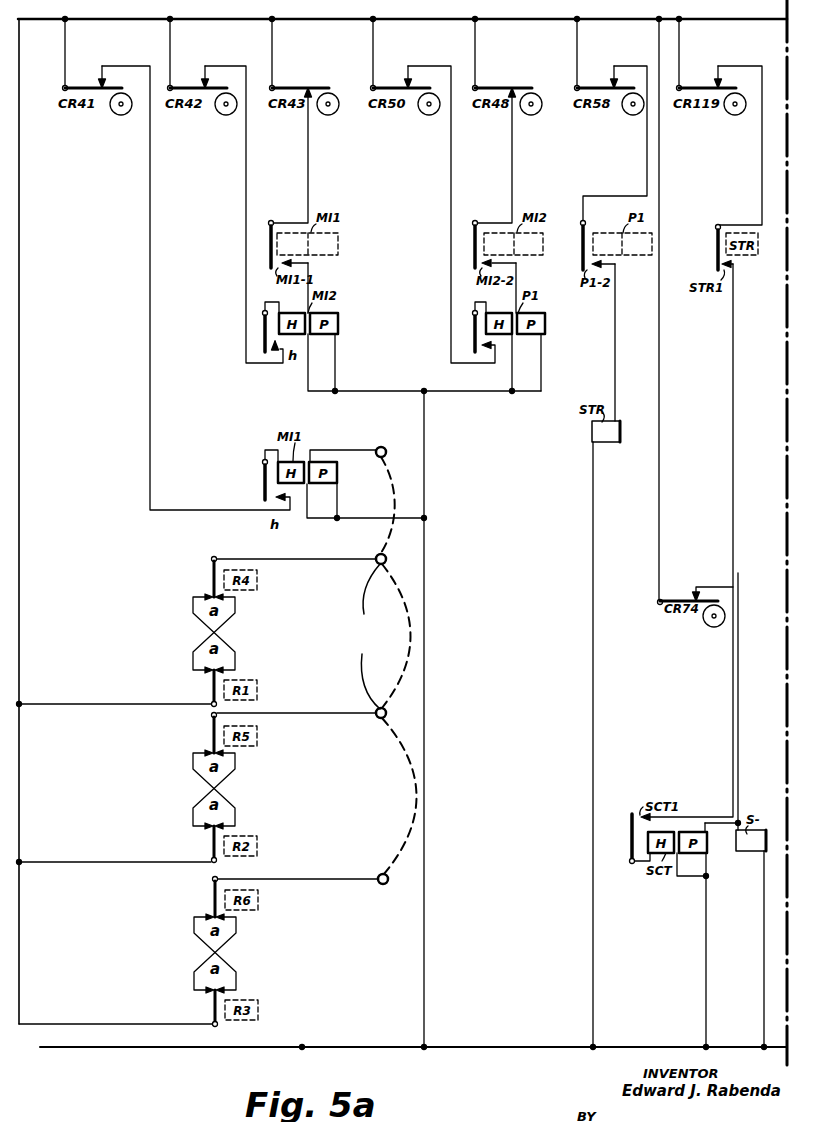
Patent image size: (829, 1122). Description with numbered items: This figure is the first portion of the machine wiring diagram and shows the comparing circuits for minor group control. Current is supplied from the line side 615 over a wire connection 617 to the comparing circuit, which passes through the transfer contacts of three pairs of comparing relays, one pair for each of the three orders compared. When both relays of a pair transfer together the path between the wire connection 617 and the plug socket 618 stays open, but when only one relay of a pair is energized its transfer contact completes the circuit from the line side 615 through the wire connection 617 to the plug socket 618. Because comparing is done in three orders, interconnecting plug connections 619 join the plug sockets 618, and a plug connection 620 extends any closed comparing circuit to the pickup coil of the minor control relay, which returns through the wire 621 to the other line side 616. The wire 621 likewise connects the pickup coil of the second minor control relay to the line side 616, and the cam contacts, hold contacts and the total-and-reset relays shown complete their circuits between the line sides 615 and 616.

The line side 615 is at (223, 14).
The line side 616 is at (303, 1047).
The wire connection 617 is at (20, 648).
The plug socket 618 is at (386, 719).
The interconnecting plug connections 619 is at (412, 639).
The plug connection 620 is at (399, 486).
The wire 621 is at (424, 905).